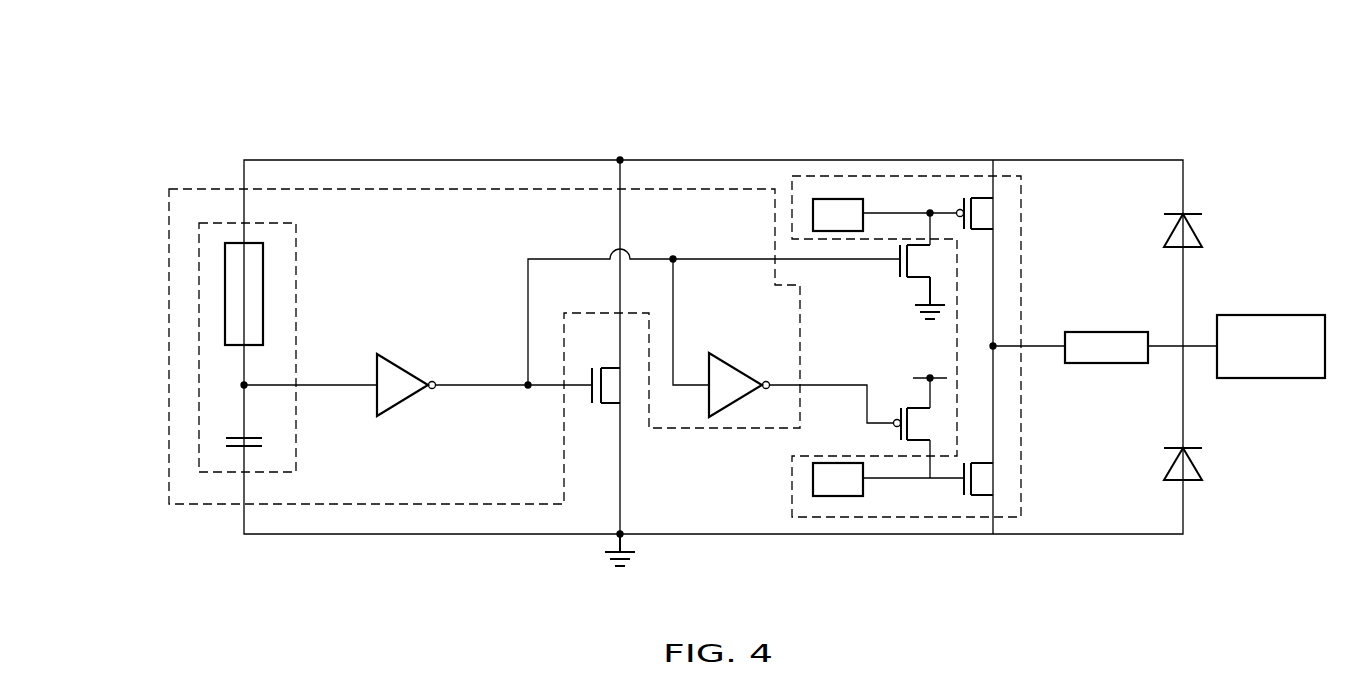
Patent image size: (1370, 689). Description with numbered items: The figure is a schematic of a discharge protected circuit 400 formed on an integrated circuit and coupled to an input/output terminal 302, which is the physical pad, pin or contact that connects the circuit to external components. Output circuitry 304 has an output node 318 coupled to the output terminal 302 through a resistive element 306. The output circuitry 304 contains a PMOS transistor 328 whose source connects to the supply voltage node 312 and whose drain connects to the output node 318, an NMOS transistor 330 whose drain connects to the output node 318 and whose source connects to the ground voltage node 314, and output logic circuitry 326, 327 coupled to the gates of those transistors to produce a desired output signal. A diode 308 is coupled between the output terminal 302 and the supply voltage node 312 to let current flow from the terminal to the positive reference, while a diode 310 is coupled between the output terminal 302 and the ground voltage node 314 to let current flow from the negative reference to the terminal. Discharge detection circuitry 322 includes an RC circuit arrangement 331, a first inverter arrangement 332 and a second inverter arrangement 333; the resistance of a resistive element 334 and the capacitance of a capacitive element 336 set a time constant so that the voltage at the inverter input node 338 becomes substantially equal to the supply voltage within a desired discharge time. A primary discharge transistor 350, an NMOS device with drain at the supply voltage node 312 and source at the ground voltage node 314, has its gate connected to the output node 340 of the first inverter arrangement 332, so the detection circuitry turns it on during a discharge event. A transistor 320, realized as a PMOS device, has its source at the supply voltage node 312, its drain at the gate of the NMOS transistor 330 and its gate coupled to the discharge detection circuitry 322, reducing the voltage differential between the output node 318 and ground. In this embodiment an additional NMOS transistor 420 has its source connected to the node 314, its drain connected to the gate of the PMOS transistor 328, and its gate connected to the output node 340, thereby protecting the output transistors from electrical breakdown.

The discharge protected circuit 400 is at (713, 282).
The input/output terminal 302 is at (1270, 315).
The output circuitry 304 is at (935, 517).
The resistive element 306 is at (1110, 332).
The diode 308 is at (1197, 230).
The diode 310 is at (1197, 464).
The supply voltage node 312 is at (620, 160).
The ground voltage node 314 is at (622, 532).
The output node 318 is at (995, 344).
The transistor 320 is at (975, 428).
The discharge detection circuitry 322 is at (408, 189).
The output logic circuitry 326 is at (848, 199).
The output logic circuitry 327 is at (850, 496).
The PMOS transistor 328 is at (1033, 208).
The NMOS transistor 330 is at (1036, 488).
The RC circuit arrangement 331 is at (199, 437).
The first inverter arrangement 332 is at (404, 357).
The second inverter arrangement 333 is at (736, 357).
The resistive element 334 is at (225, 293).
The capacitive element 336 is at (236, 448).
The inverter input node 338 is at (240, 385).
The output node of the first inverter arrangement 340 is at (528, 390).
The primary discharge transistor 350 is at (651, 417).
The NMOS transistor 420 is at (978, 244).